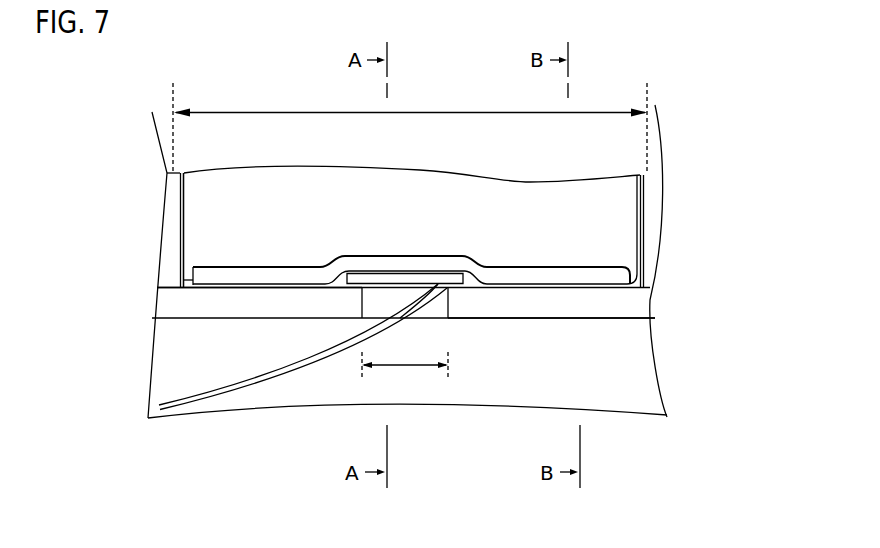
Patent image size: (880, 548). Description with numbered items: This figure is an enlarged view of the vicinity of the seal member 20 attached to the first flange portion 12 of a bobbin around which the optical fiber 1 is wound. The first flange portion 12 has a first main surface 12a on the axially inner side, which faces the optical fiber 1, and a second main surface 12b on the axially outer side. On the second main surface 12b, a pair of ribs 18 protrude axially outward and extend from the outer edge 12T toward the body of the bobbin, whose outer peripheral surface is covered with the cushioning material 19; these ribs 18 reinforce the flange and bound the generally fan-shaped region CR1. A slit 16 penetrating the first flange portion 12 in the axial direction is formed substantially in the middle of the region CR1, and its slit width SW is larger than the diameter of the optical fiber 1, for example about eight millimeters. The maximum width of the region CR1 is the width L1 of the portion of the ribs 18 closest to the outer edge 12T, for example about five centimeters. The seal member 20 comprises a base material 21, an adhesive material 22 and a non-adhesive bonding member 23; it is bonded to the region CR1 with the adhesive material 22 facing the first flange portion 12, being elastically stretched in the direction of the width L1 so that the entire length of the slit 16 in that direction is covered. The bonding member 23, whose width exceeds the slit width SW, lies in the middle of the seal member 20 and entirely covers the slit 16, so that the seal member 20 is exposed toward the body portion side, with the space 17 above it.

The optical fiber 1 is at (190, 405).
The first flange portion 12 is at (640, 302).
The outer edge 12T is at (168, 303).
The first main surface 12a is at (597, 320).
The second main surface 12b is at (192, 276).
The slit 16 is at (430, 308).
The housing space 17 is at (290, 216).
The ribs 18 is at (180, 215).
The cushioning material 19 is at (290, 382).
The seal member 20 is at (398, 232).
The base material 21 is at (358, 258).
The adhesive material 22 is at (273, 285).
The bonding member 23 is at (421, 278).
The region CR1 is at (191, 276).
The width L1 is at (410, 128).
The slit width SW is at (405, 358).